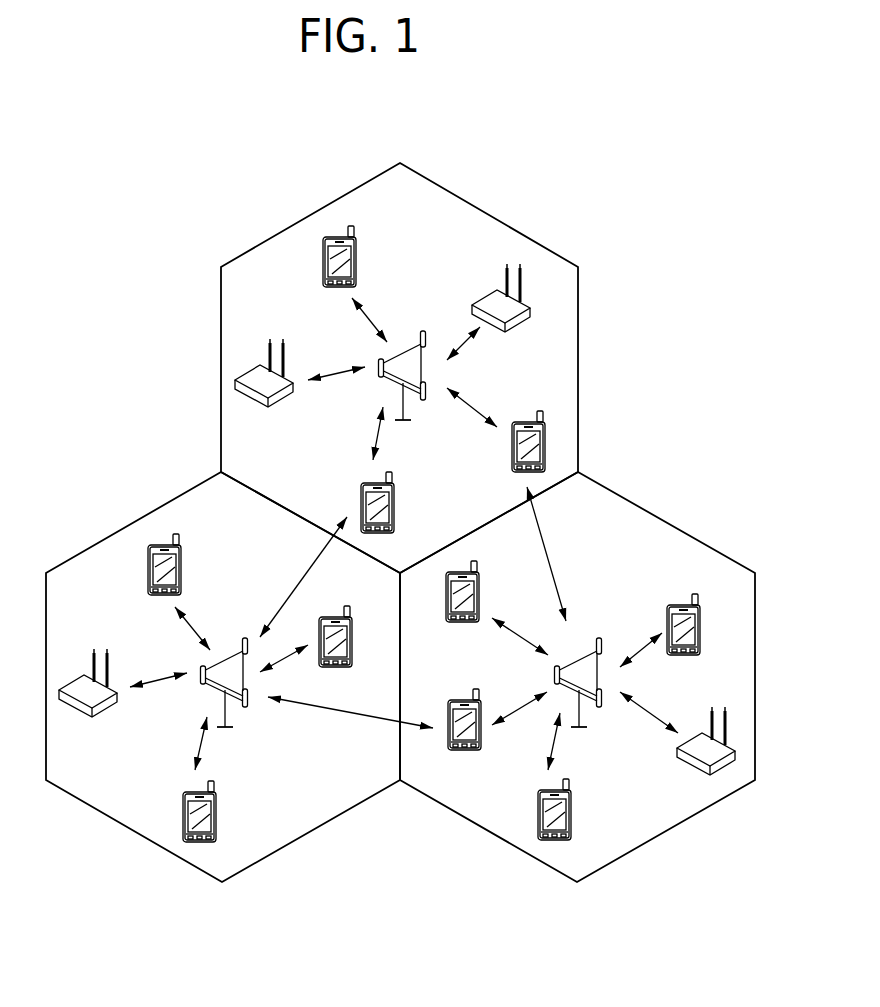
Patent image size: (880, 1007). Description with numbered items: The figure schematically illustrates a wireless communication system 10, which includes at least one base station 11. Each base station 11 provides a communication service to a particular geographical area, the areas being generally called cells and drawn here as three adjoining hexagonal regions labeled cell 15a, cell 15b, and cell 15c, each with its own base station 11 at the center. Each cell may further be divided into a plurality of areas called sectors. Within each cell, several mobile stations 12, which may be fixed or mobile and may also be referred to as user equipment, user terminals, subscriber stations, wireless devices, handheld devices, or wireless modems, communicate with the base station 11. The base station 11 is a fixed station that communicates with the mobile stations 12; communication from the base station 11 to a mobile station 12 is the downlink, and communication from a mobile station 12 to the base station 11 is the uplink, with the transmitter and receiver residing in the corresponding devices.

The wireless communication system 10 is at (660, 262).
The base station 11 is at (420, 345).
The mobile station 12 is at (357, 262).
The cell 15a is at (580, 355).
The cell 15b is at (692, 537).
The cell 15c is at (112, 535).